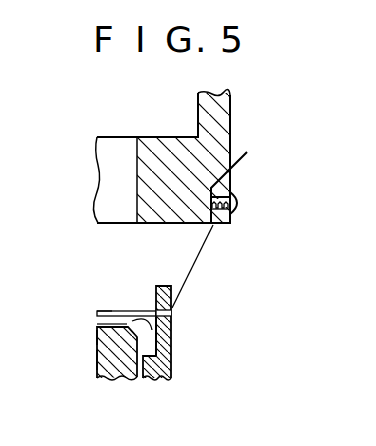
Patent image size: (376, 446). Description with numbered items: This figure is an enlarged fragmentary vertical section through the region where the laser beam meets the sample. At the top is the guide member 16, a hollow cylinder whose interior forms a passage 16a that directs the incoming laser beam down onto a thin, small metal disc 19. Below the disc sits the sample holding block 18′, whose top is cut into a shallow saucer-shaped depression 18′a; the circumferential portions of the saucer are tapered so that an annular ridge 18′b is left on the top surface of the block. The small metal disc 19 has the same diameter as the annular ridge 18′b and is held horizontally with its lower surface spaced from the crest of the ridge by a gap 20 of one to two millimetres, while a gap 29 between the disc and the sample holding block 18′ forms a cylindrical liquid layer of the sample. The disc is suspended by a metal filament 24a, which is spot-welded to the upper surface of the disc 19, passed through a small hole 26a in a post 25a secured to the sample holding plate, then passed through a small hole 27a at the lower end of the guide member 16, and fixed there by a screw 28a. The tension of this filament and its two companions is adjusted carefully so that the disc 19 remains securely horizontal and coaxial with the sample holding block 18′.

The guide member 16 is at (229, 113).
The passage 16a is at (135, 111).
The small hole 27a is at (213, 225).
The screw 28a is at (237, 195).
The gap 20 is at (171, 339).
The post 25a is at (163, 368).
The small hole 26a is at (172, 310).
The metal filament 24a is at (137, 309).
The small metal disc 19 is at (97, 312).
The gap 29 is at (95, 327).
The sample holding block 18′ is at (115, 378).
The depression 18′a is at (97, 338).
The annular ridge 18′b is at (97, 360).